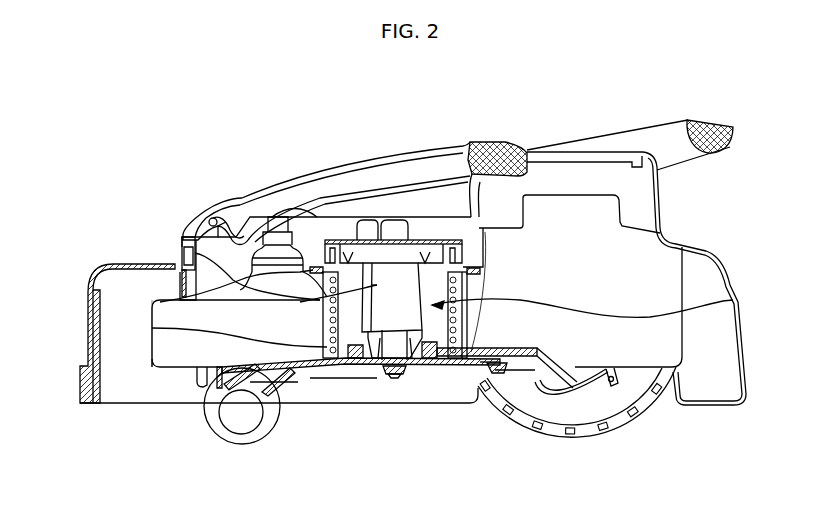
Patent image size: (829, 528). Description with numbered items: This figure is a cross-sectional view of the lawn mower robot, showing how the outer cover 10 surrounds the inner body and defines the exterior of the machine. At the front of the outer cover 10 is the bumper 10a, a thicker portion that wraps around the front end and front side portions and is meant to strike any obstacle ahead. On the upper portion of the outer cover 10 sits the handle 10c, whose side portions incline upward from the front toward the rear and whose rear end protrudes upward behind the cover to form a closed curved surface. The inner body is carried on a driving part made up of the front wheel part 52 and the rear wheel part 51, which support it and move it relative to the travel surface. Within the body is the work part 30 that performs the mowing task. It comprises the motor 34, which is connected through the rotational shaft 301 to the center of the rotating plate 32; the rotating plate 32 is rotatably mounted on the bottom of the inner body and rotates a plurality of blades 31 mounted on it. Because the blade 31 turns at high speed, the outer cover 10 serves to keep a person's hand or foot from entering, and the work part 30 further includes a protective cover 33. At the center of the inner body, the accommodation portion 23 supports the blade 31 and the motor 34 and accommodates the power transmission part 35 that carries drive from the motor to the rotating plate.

The outer cover 10 is at (207, 208).
The bumper 10a is at (98, 312).
The handle 10c is at (732, 134).
The work part 30 is at (735, 300).
The rotational shaft 301 is at (155, 305).
The motor 34 is at (182, 252).
The power transmission part 35 is at (393, 355).
The accommodation portion 23 is at (432, 352).
The rotating plate 32 is at (460, 357).
The blade 31 is at (530, 370).
The protective cover 33 is at (572, 384).
The rear wheel part 51 is at (598, 392).
The front wheel part 52 is at (233, 427).